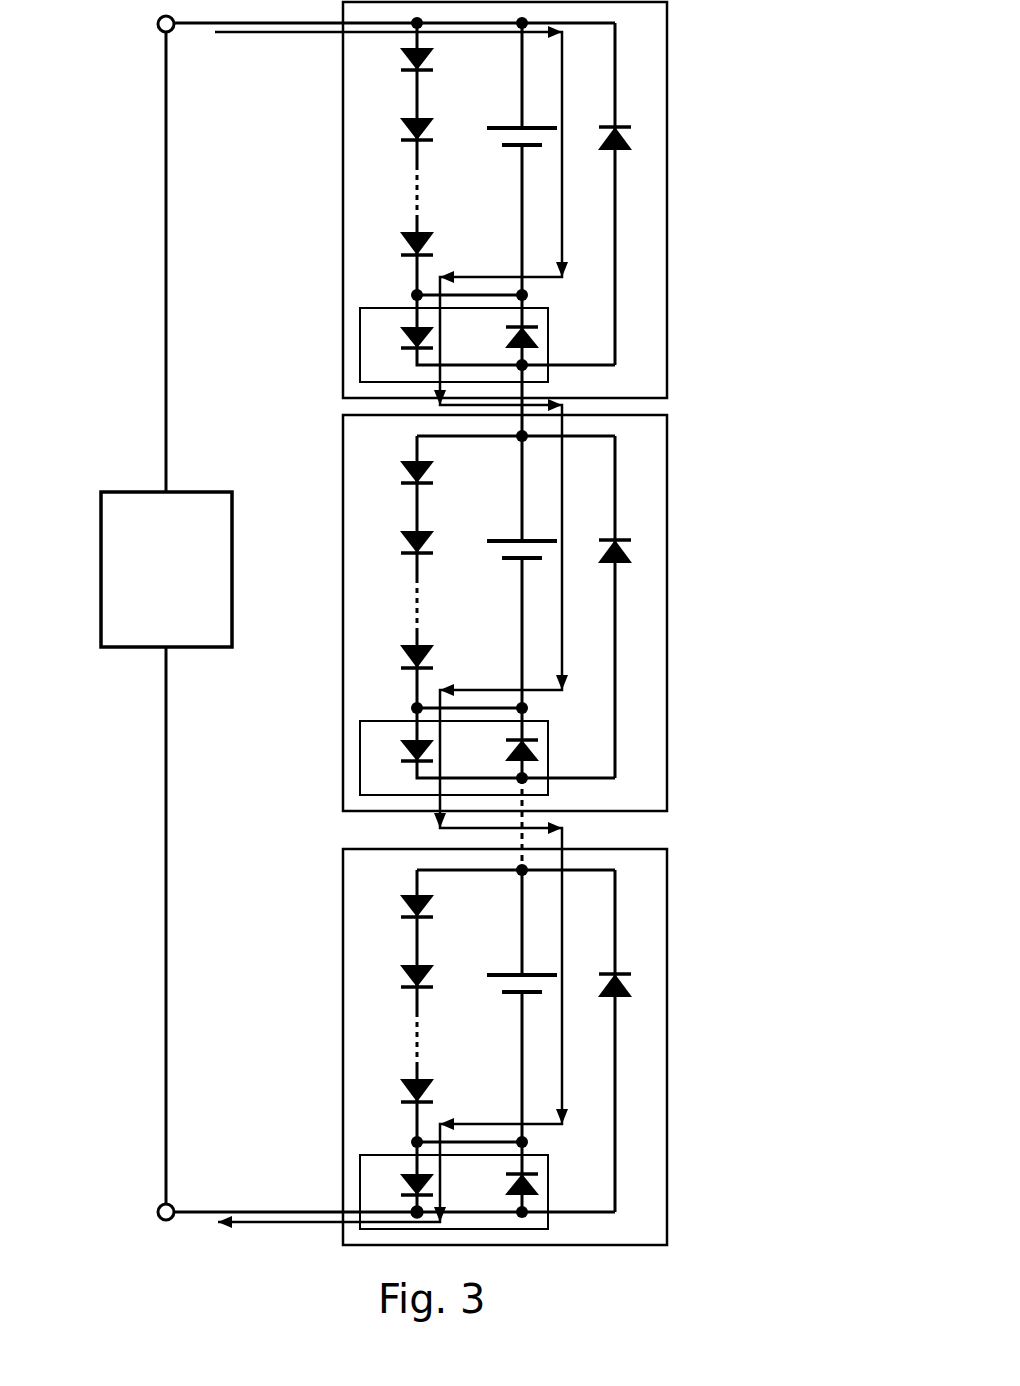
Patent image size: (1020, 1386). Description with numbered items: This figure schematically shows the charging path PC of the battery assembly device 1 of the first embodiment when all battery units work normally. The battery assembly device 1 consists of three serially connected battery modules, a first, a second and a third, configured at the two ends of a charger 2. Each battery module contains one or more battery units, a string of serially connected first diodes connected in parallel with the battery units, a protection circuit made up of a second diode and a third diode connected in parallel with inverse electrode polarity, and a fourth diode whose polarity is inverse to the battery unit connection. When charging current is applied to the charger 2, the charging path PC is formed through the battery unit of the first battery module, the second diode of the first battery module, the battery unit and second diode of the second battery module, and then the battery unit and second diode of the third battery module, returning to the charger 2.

The battery assembly device 1 is at (748, 122).
The charger 2 is at (166, 618).
The charging path PC is at (391, 636).